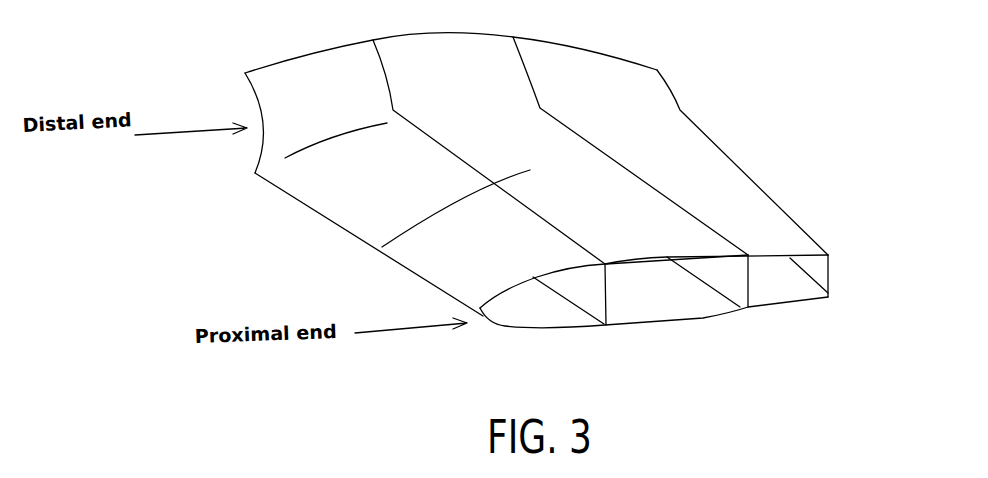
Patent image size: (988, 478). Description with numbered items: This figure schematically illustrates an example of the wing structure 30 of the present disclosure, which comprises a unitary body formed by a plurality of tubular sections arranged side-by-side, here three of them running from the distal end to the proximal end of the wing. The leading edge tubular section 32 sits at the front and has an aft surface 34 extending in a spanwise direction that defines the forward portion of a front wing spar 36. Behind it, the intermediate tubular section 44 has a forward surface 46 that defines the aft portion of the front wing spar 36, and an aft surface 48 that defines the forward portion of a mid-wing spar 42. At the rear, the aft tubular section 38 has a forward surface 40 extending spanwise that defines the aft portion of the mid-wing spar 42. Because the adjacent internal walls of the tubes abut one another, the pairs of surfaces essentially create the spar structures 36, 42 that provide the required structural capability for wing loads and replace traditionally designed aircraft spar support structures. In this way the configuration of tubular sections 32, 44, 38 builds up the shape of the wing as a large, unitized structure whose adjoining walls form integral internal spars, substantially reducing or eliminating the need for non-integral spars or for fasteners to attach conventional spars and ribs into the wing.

The wing structure 30 is at (746, 62).
The leading edge tubular section 32 is at (352, 175).
The aft surface 34 is at (593, 302).
The front wing spar 36 is at (620, 328).
The aft tubular section 38 is at (687, 158).
The forward surface 40 is at (770, 292).
The mid-wing spar 42 is at (762, 314).
The intermediate tubular section 44 is at (382, 247).
The forward surface 46 is at (630, 305).
The aft surface 48 is at (735, 287).